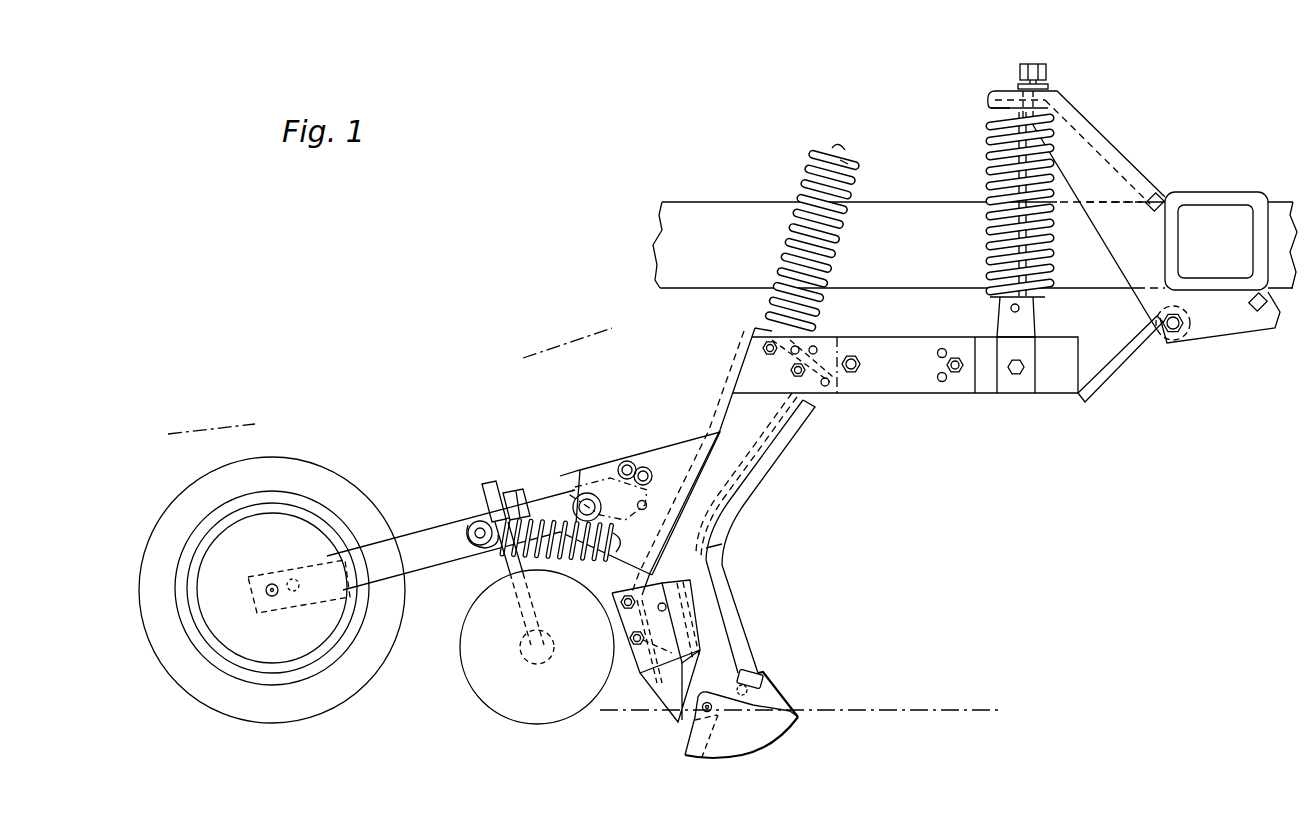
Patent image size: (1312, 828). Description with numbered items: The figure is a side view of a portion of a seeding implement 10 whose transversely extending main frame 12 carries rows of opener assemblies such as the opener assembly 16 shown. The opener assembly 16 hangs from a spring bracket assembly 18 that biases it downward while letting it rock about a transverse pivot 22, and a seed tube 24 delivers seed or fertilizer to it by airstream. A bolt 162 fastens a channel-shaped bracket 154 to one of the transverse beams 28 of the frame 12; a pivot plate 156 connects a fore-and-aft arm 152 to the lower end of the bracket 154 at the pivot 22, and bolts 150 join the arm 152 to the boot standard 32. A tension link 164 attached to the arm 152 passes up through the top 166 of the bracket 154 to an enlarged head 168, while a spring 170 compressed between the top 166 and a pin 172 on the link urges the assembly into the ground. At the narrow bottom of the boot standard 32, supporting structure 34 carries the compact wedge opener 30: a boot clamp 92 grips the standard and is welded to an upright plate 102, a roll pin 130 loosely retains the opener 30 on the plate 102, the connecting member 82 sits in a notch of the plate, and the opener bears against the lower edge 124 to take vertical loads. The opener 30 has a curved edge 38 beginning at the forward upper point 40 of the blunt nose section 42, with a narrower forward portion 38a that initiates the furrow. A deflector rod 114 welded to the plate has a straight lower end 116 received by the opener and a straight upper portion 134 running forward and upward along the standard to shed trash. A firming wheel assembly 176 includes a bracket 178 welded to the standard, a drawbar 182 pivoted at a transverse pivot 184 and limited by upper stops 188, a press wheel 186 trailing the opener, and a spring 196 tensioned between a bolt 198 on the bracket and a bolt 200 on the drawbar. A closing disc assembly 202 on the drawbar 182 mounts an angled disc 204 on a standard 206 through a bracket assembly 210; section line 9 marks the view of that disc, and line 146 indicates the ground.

The seeding implement 10 is at (1210, 110).
The main frame 12 is at (724, 252).
The opener assembly 16 is at (910, 474).
The spring bracket assembly 18 is at (962, 80).
The transverse pivot 22 is at (1173, 334).
The seed tube 24 is at (820, 170).
The transverse beam 28 is at (1212, 205).
The wedge opener 30 is at (782, 770).
The boot standard 32 is at (722, 403).
The supporting structure 34 is at (780, 591).
The curved edge 38 is at (725, 763).
The forward portion of the curved edge 38a is at (793, 730).
The forward upper point 40 is at (800, 719).
The nose section 42 is at (788, 692).
The connecting member 82 is at (772, 677).
The boot clamp 92 is at (612, 595).
The upright plate 102 is at (700, 612).
The deflector rod 114 is at (723, 533).
The lower end of deflector rod 116 is at (738, 648).
The lower edge of plate 124 is at (695, 762).
The roll pin 130 is at (700, 710).
The upper portion of deflector rod 134 is at (793, 437).
The ground line / depth reference 146 is at (632, 700).
The bolts 150 is at (795, 377).
The arm 152 is at (920, 387).
The bracket 154 is at (1230, 331).
The pivot plate 156 is at (1117, 373).
The bolt 162 is at (1257, 191).
The tension link 164 is at (1007, 171).
The top of bracket 166 is at (992, 90).
The enlarged head 168 is at (1048, 70).
The spring 170 is at (1002, 143).
The pin 172 is at (1005, 322).
The firming wheel assembly 176 is at (406, 433).
The bracket 178 is at (667, 443).
The drawbar 182 is at (428, 535).
The transverse pivot 184 is at (566, 528).
The press wheel 186 is at (337, 452).
The upper stops 188 is at (630, 461).
The spring 196 is at (510, 590).
The bolt 198 is at (713, 523).
The bolt 200 is at (469, 527).
The closing disc assembly 202 is at (448, 678).
The angled disc 204 is at (490, 712).
The standard 206 is at (487, 480).
The bracket assembly 210 is at (507, 487).
The section line 9- 9 is at (604, 360).